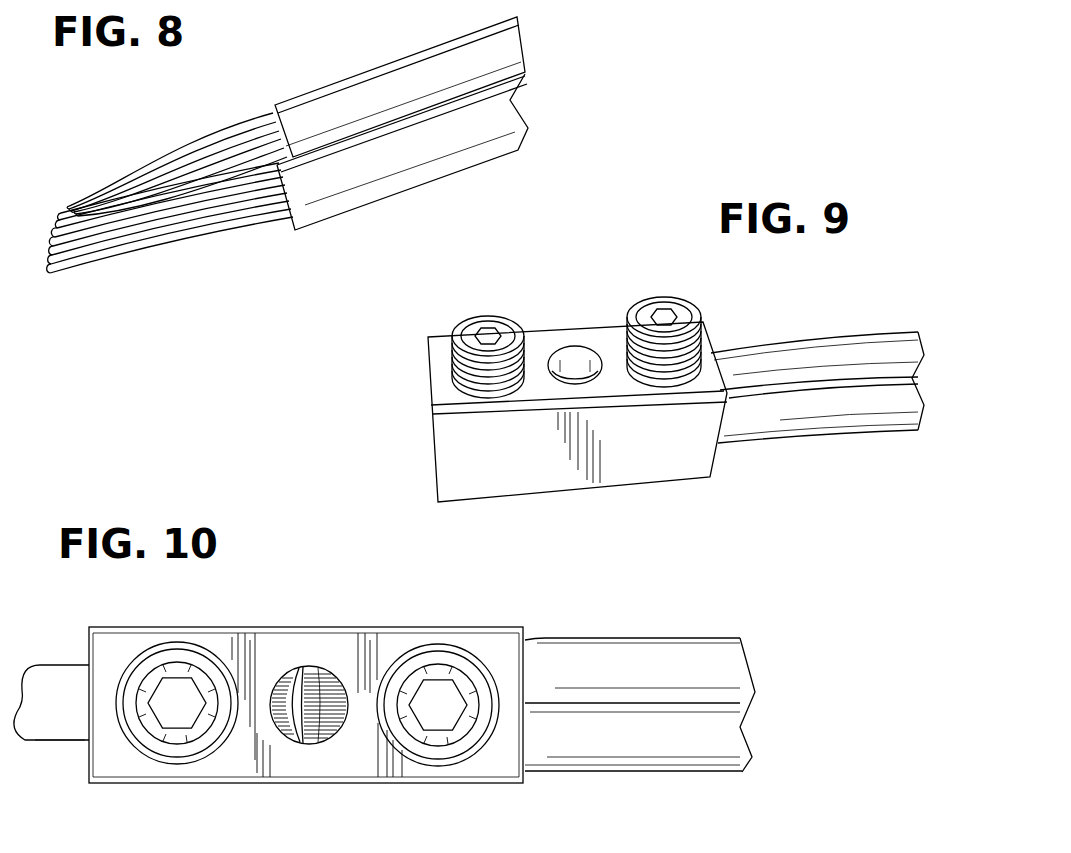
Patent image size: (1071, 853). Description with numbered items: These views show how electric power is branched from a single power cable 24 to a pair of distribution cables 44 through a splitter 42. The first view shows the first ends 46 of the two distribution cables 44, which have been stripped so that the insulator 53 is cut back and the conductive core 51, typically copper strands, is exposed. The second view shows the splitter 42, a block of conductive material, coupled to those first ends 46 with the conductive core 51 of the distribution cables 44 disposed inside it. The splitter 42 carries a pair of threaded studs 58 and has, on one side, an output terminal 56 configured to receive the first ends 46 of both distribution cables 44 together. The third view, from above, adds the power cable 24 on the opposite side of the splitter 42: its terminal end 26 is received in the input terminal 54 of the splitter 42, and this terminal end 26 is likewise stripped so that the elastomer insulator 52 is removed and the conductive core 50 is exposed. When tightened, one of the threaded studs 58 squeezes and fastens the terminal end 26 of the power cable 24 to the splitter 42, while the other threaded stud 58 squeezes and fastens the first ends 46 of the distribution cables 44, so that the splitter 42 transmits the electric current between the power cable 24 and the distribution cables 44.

In FIG. 10, the power cable 24 is at (38, 673).
In FIG. 10, the terminal end 26 is at (297, 658).
In FIG. 9, the splitter 42 is at (544, 343).
In FIG. 10, the splitter 42 is at (222, 640).
In FIG. 8, the distribution cables 44 is at (162, 227).
In FIG. 9, the distribution cables 44 is at (869, 400).
In FIG. 10, the distribution cables 44 is at (608, 670).
In FIG. 8, the first end 46 is at (44, 239).
In FIG. 10, the first end 46 is at (328, 660).
In FIG. 10, the conductive core 50 is at (292, 697).
In FIG. 8, the conductive core 51 is at (263, 118).
In FIG. 10, the conductive core 51 is at (332, 695).
In FIG. 10, the insulator 52 is at (50, 727).
In FIG. 8, the insulator 53 is at (350, 100).
In FIG. 9, the insulator 53 is at (787, 363).
In FIG. 10, the insulator 53 is at (678, 650).
In FIG. 9, the input terminal 54 is at (432, 435).
In FIG. 10, the input terminal 54 is at (529, 742).
In FIG. 9, the output terminal 56 is at (739, 332).
In FIG. 10, the output terminal 56 is at (72, 685).
In FIG. 9, the threaded studs 58 is at (486, 335).
In FIG. 10, the threaded studs 58 is at (177, 753).